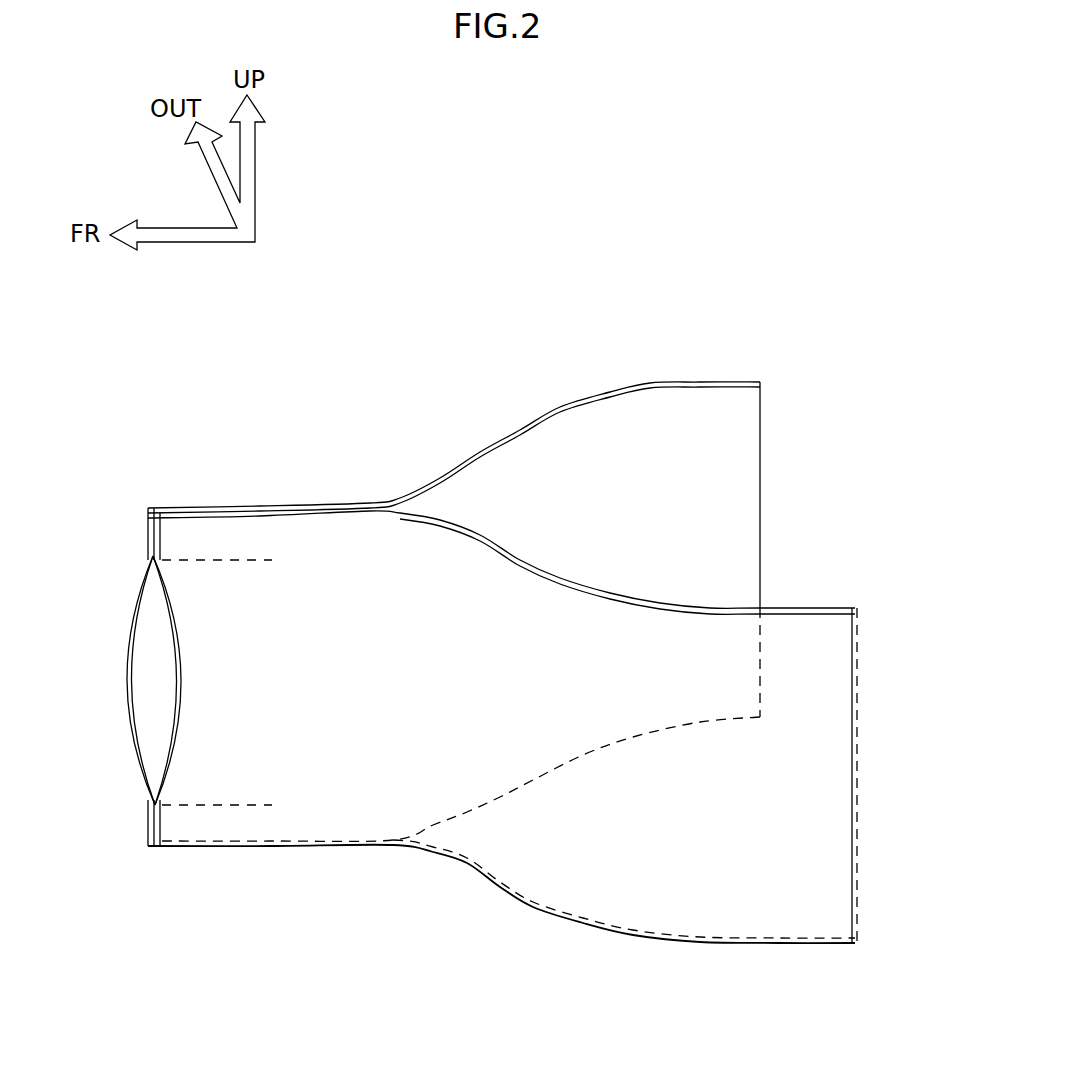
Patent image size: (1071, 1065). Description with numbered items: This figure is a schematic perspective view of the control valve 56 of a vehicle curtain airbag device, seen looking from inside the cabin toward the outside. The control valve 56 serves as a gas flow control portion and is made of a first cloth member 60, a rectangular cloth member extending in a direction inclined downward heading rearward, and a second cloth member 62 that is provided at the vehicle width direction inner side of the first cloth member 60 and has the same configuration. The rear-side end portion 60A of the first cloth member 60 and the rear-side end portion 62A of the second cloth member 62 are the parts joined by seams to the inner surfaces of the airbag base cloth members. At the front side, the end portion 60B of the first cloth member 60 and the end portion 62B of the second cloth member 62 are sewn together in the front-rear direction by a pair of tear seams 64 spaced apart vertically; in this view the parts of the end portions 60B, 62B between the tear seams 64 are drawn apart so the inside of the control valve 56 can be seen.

The control valve 56 is at (328, 428).
The first cloth member 60 is at (515, 487).
The end portion of the first cloth member 60A is at (732, 493).
The end portion of the first cloth member 60B is at (158, 677).
The second cloth member 62 is at (537, 608).
The end portion of the second cloth member 62A is at (823, 780).
The end portion of the second cloth member 62B is at (185, 680).
The tear seams 64 is at (153, 557).